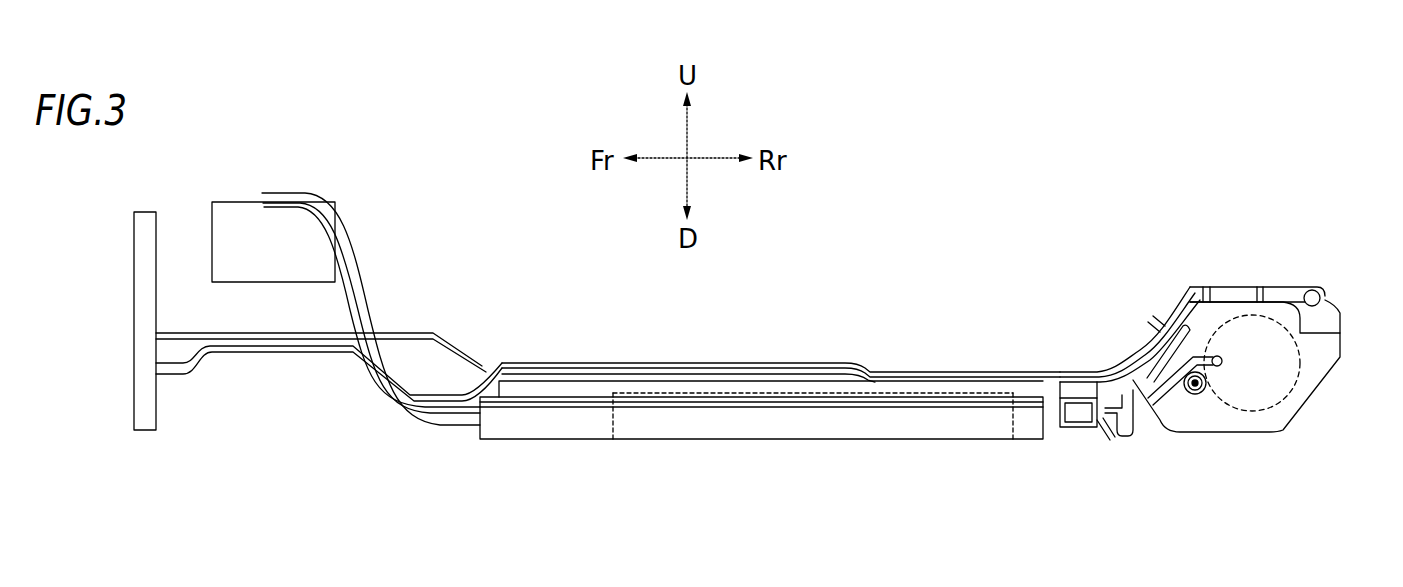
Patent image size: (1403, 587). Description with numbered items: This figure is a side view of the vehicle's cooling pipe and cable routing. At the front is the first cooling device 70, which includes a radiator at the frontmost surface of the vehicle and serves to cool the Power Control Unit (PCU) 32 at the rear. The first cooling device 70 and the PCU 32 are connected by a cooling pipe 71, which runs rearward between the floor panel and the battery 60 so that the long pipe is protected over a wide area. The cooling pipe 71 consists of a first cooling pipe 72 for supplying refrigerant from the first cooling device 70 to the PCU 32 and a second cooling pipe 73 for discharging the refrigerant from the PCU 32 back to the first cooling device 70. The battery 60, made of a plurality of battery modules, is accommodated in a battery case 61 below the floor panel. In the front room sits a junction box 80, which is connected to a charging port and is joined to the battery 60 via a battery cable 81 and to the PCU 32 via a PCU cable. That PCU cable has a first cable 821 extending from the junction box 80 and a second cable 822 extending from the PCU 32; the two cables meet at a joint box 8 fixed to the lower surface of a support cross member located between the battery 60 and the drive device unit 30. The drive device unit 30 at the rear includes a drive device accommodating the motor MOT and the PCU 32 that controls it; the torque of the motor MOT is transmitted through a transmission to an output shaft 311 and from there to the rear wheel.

The first cooling device 70 is at (133, 284).
The junction box 80 is at (240, 240).
The battery cable 81 is at (448, 432).
The cooling pipe 71 is at (329, 413).
The first cooling pipe 72 is at (247, 352).
The second cooling pipe 73 is at (350, 352).
The first cable 821 is at (598, 362).
The battery 60 is at (761, 457).
The battery case 61 is at (972, 441).
The joint box 8 is at (1082, 430).
The second cable 822 is at (1133, 412).
The Power Control Unit (PCU) 32 is at (1335, 322).
The drive device unit 30 is at (1268, 391).
The motor MOT is at (1287, 397).
The output shaft 311 is at (1205, 392).